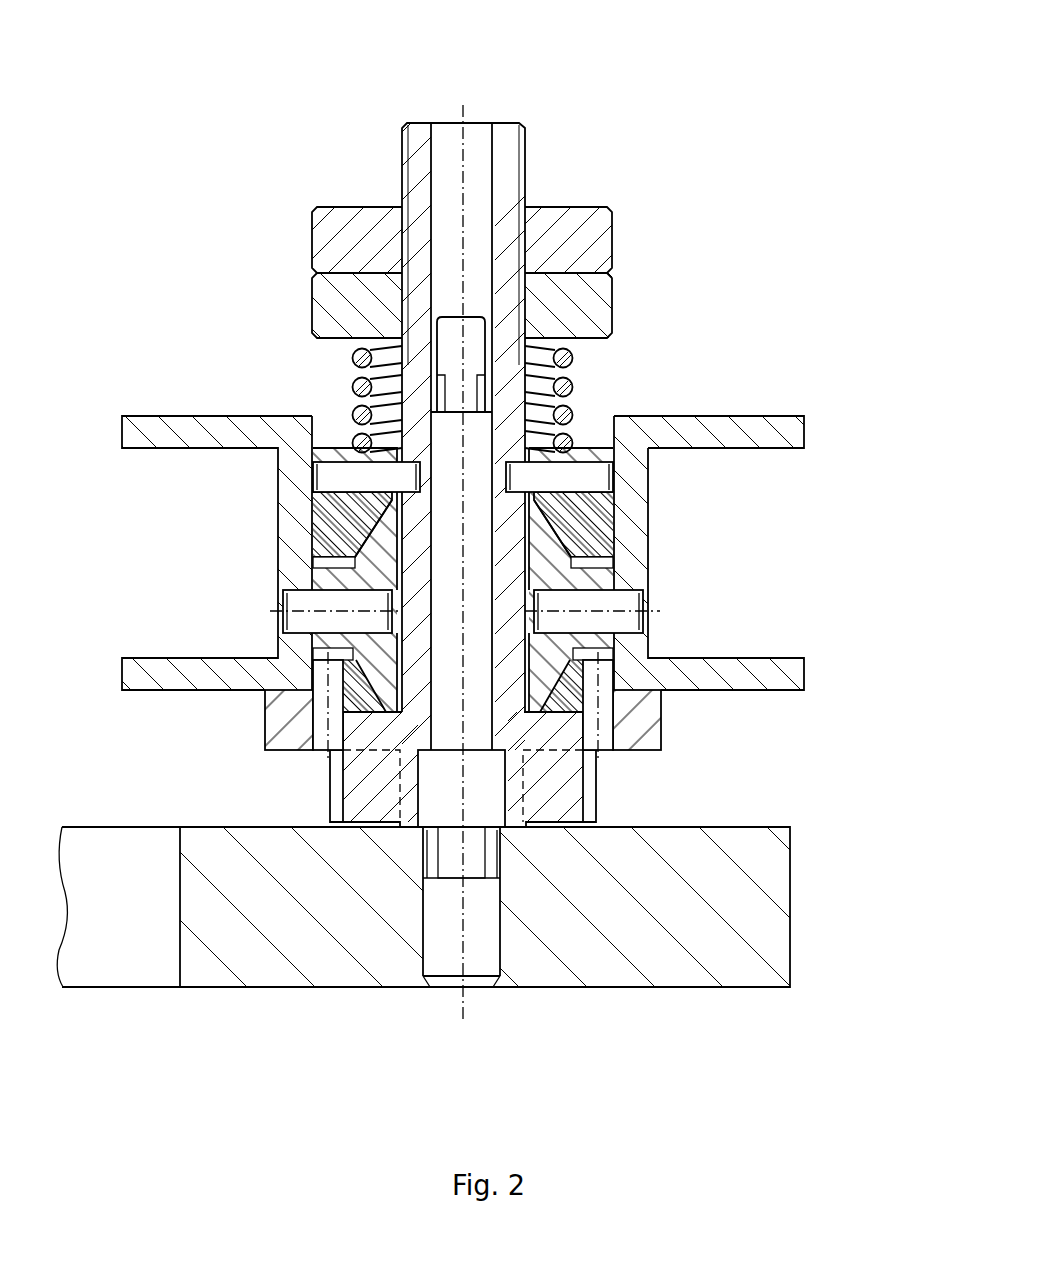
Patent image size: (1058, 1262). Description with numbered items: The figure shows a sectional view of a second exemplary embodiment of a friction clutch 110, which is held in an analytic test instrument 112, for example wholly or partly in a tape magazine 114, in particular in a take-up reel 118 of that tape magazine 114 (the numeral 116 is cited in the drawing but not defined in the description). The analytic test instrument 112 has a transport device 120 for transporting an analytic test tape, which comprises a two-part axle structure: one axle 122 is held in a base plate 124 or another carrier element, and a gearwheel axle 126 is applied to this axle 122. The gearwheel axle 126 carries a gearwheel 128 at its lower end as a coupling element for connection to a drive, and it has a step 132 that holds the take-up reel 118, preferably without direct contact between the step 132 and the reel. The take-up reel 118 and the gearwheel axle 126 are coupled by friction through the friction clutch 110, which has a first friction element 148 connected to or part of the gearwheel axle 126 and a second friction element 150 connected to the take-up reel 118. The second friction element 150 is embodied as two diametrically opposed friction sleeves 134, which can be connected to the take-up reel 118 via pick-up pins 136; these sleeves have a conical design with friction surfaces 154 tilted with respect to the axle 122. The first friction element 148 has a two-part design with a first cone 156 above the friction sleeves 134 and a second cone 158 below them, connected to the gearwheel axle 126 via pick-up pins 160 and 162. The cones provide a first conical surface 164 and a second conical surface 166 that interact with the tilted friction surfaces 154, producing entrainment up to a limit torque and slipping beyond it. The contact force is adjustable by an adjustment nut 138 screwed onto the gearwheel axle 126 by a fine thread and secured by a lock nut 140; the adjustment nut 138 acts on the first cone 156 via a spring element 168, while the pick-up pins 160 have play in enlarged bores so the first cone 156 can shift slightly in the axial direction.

The friction clutch 110 is at (244, 548).
The analytic test instrument 112 is at (631, 146).
The tape magazine 114 is at (585, 209).
The holding device 116 is at (603, 209).
The take-up reel 118 is at (776, 432).
The transport device 120 is at (398, 922).
The axle 122 is at (453, 962).
The base plate 124 is at (557, 972).
The gearwheel axle 126 is at (650, 717).
The gearwheel 128 is at (362, 793).
The step 132 is at (615, 667).
The friction sleeve 134 is at (541, 560).
The pick-up pin 136 is at (286, 605).
The adjustment nut 138 is at (592, 299).
The lock nut 140 is at (592, 233).
The first friction element 148 is at (597, 525).
The second friction element 150 is at (660, 536).
The friction surface 154 is at (327, 555).
The first cone 156 is at (549, 519).
The second cone 158 is at (567, 677).
The pick-up pin 160 is at (345, 472).
The pick-up pin 162 is at (318, 728).
The first conical surface 164 is at (388, 533).
The second conical surface 166 is at (375, 633).
The spring element 168 is at (568, 385).